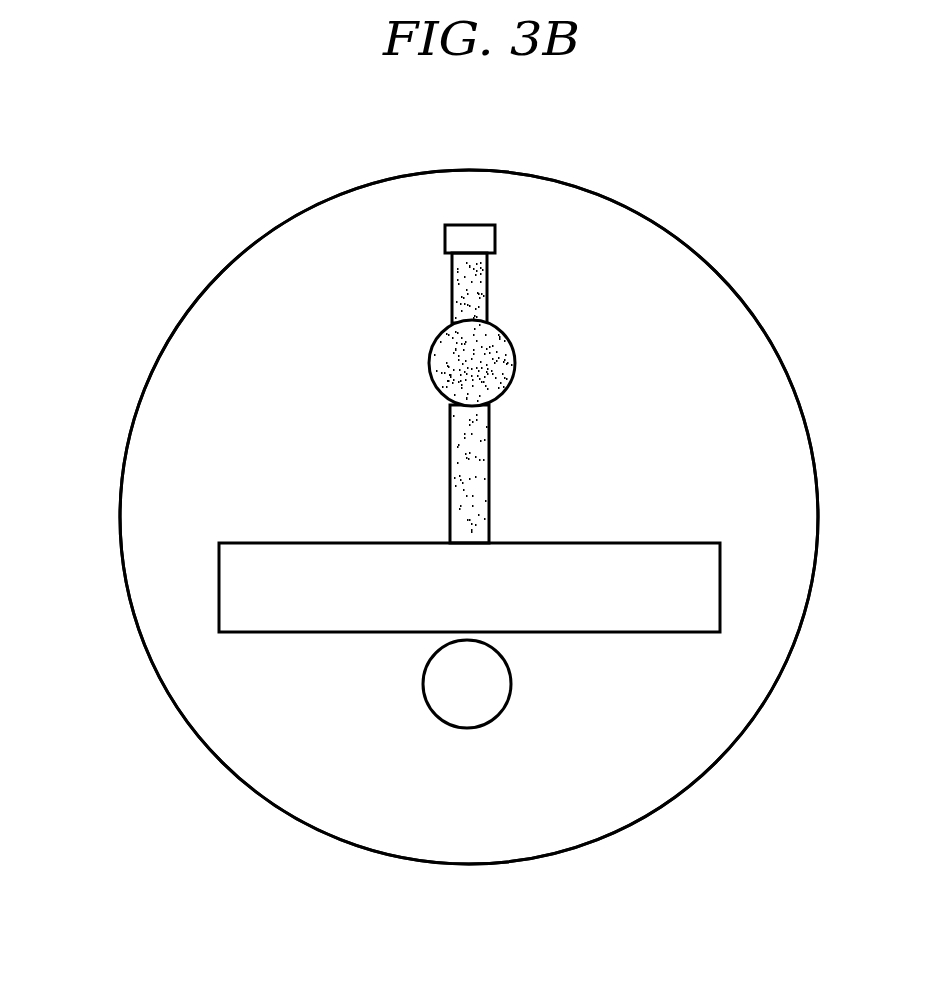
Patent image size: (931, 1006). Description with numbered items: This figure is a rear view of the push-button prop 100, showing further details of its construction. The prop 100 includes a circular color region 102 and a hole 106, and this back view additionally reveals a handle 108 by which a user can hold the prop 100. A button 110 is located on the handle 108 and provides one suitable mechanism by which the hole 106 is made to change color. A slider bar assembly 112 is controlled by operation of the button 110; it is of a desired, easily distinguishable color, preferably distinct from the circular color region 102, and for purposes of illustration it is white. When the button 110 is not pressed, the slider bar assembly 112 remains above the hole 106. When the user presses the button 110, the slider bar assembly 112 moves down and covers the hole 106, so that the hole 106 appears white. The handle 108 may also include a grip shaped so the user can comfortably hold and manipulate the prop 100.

The prop 100 is at (138, 336).
The circular color region 102 is at (121, 516).
The hole 106 is at (512, 683).
The handle 108 is at (516, 363).
The button 110 is at (445, 238).
The slider bar assembly 112 is at (637, 543).